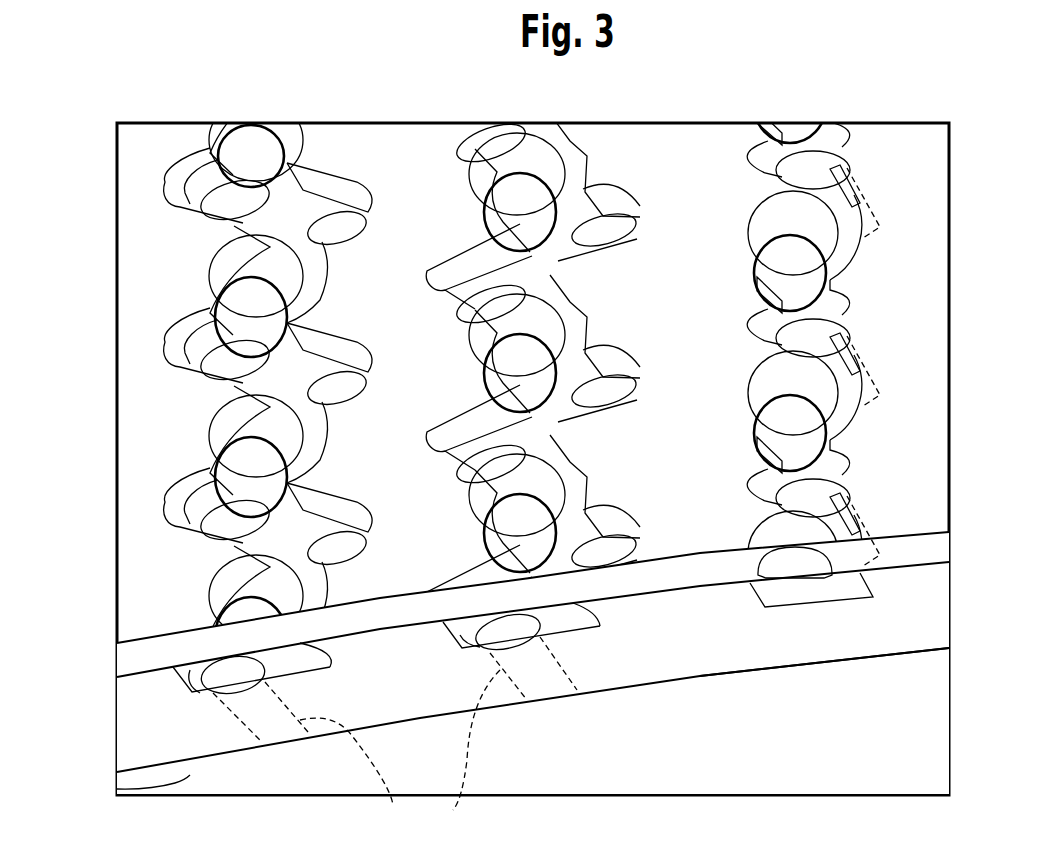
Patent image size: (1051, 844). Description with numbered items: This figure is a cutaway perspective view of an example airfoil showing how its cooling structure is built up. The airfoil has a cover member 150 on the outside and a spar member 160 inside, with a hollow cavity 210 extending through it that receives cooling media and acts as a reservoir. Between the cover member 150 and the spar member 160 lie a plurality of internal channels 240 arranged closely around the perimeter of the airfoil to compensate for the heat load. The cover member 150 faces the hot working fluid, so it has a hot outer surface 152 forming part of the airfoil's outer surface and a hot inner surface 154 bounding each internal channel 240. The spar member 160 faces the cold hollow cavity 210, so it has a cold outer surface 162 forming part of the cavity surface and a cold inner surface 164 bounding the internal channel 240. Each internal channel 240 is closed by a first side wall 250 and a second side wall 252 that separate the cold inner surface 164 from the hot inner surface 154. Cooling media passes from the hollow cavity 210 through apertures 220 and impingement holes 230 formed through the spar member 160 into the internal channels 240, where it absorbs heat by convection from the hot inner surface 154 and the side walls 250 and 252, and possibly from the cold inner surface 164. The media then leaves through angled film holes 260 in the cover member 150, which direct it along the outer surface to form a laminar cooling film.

The cover member 150 is at (133, 655).
The hot outer surface 152 is at (913, 540).
The hot inner surface 154 is at (547, 627).
The spar member 160 is at (140, 712).
The cold outer surface 162 is at (913, 657).
The cold inner surface 164 is at (556, 603).
The hollow cavity 210 is at (130, 788).
The apertures 220 is at (873, 197).
The impingement holes 230 is at (782, 312).
The internal channel 240 is at (580, 220).
The first side wall 250 is at (178, 188).
The second side wall 252 is at (347, 185).
The angled film holes 260 is at (782, 382).